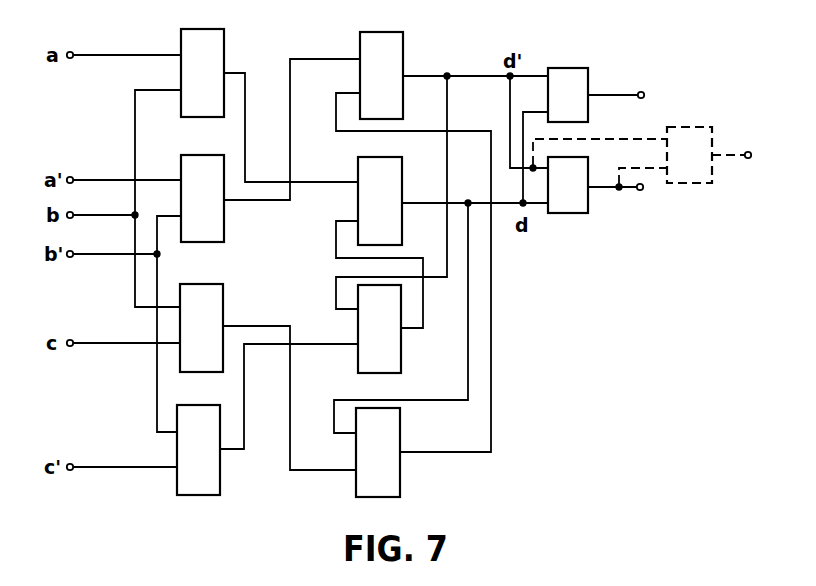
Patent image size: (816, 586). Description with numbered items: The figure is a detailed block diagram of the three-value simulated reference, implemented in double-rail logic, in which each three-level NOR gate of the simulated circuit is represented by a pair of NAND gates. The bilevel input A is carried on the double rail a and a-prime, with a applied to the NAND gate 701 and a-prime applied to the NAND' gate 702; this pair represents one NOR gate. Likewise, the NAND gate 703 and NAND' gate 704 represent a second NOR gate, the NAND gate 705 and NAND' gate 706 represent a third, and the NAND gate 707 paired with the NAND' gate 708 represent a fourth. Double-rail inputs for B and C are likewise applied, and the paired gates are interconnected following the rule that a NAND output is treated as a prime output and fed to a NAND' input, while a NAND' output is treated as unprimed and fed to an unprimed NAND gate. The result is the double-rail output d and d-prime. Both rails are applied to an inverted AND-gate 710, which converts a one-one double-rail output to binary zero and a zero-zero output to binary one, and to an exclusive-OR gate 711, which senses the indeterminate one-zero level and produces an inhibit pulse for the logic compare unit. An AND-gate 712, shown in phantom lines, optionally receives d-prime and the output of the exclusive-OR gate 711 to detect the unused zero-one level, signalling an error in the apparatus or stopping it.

The NAND gate 701 is at (197, 30).
The NAND' gate 702 is at (197, 156).
The NAND gate 703 is at (195, 285).
The NAND' gate 704 is at (192, 406).
The NAND gate 705 is at (375, 33).
The NAND' gate 706 is at (373, 158).
The NAND gate 707 is at (370, 373).
The NAND' gate 708 is at (370, 497).
The inverted AND-gate 710 is at (559, 68).
The exclusive-OR gate 711 is at (562, 213).
The AND-gate 712 is at (680, 126).